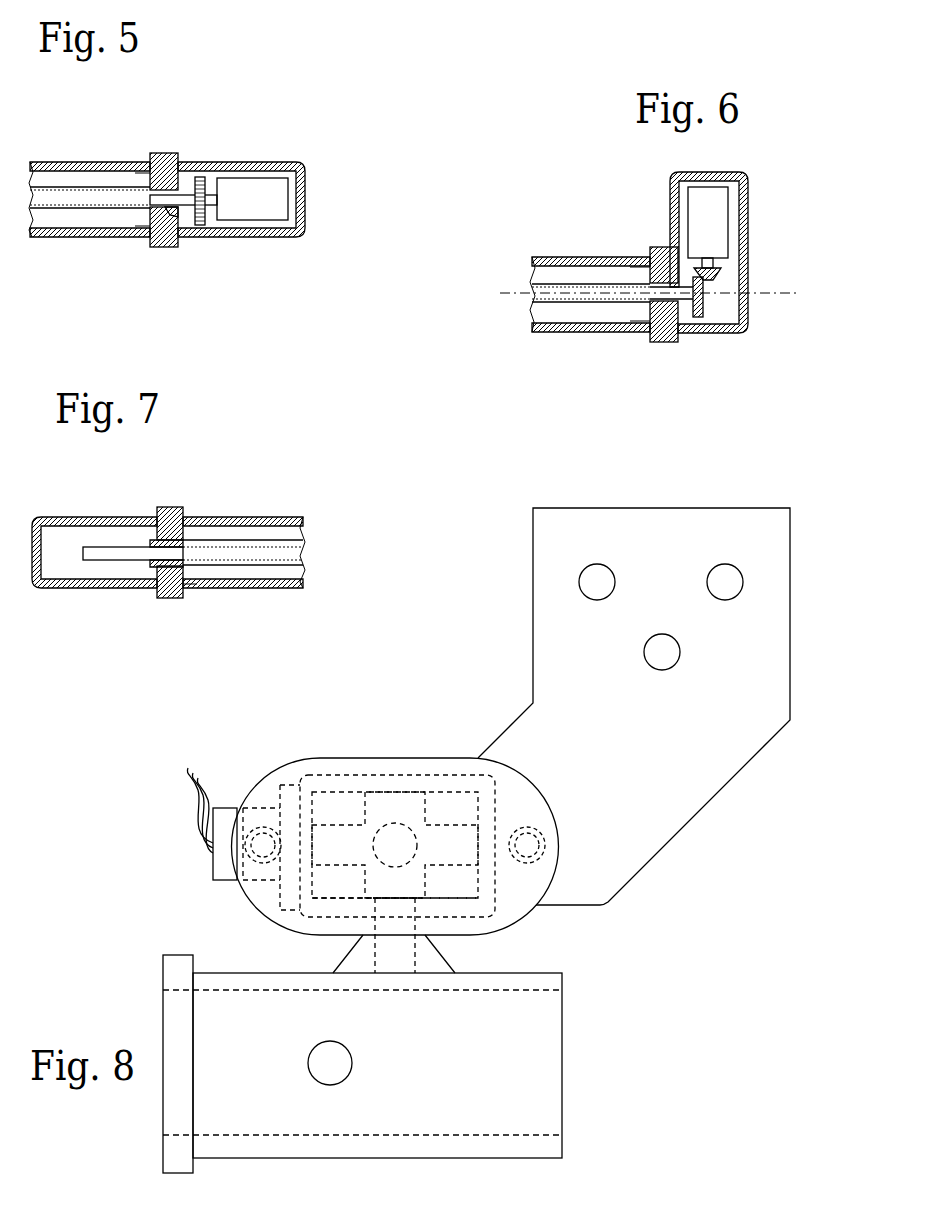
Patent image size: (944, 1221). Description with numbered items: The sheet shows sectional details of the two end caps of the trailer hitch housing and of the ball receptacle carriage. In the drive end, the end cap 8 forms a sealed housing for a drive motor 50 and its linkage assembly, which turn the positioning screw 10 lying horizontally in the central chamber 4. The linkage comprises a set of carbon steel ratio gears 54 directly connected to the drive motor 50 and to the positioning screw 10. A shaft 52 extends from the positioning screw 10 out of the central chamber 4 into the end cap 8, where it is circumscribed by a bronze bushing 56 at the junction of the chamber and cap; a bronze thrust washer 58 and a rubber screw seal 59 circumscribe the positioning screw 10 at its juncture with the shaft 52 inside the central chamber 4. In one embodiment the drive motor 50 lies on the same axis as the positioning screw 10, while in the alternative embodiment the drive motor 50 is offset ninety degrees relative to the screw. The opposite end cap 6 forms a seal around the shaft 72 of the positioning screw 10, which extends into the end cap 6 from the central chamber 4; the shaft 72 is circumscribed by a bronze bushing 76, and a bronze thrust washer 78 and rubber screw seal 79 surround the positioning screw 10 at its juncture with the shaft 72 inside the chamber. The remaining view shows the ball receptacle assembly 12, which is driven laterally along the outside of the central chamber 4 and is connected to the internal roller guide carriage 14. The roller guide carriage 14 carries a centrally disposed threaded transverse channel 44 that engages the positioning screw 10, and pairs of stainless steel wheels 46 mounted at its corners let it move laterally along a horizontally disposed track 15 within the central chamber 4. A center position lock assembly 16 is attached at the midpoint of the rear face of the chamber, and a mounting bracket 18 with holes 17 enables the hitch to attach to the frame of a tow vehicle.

In FIG. 5, the central chamber 4 is at (127, 162).
In FIG. 6, the central chamber 4 is at (577, 257).
In FIG. 7, the central chamber 4 is at (265, 517).
In FIG. 8, the central chamber 4 is at (377, 758).
In FIG. 7, the end cap 6 is at (73, 517).
In FIG. 5, the end cap 8 is at (277, 162).
In FIG. 6, the end cap 8 is at (747, 268).
In FIG. 5, the positioning screw 10 is at (77, 190).
In FIG. 6, the positioning screw 10 is at (540, 293).
In FIG. 8, the ball receptacle assembly 12 is at (522, 1123).
In FIG. 8, the roller guide carriage 14 is at (453, 845).
In FIG. 8, the track 15 is at (427, 782).
In FIG. 8, the center position lock assembly 16 is at (238, 808).
In FIG. 8, the holes 17 is at (730, 585).
In FIG. 8, the mounting bracket 18 is at (693, 797).
In FIG. 8, the transverse channel 44 is at (395, 845).
In FIG. 8, the wheels 46 is at (323, 887).
In FIG. 5, the drive motor 50 is at (273, 198).
In FIG. 6, the drive motor 50 is at (713, 200).
In FIG. 5, the shaft 52 is at (192, 194).
In FIG. 6, the shaft 52 is at (690, 310).
In FIG. 5, the ratio gears 54 is at (203, 178).
In FIG. 6, the ratio gears 54 is at (704, 300).
In FIG. 5, the bronze bushing 56 is at (178, 212).
In FIG. 6, the bronze bushing 56 is at (665, 248).
In FIG. 5, the bronze thrust washer 58 is at (137, 186).
In FIG. 6, the bronze thrust washer 58 is at (652, 318).
In FIG. 5, the rubber screw seal 59 is at (140, 226).
In FIG. 6, the rubber screw seal 59 is at (630, 267).
In FIG. 7, the shaft 72 is at (115, 550).
In FIG. 7, the bronze bushing 76 is at (163, 507).
In FIG. 7, the bronze thrust washer 78 is at (187, 540).
In FIG. 7, the rubber screw seal 79 is at (193, 588).